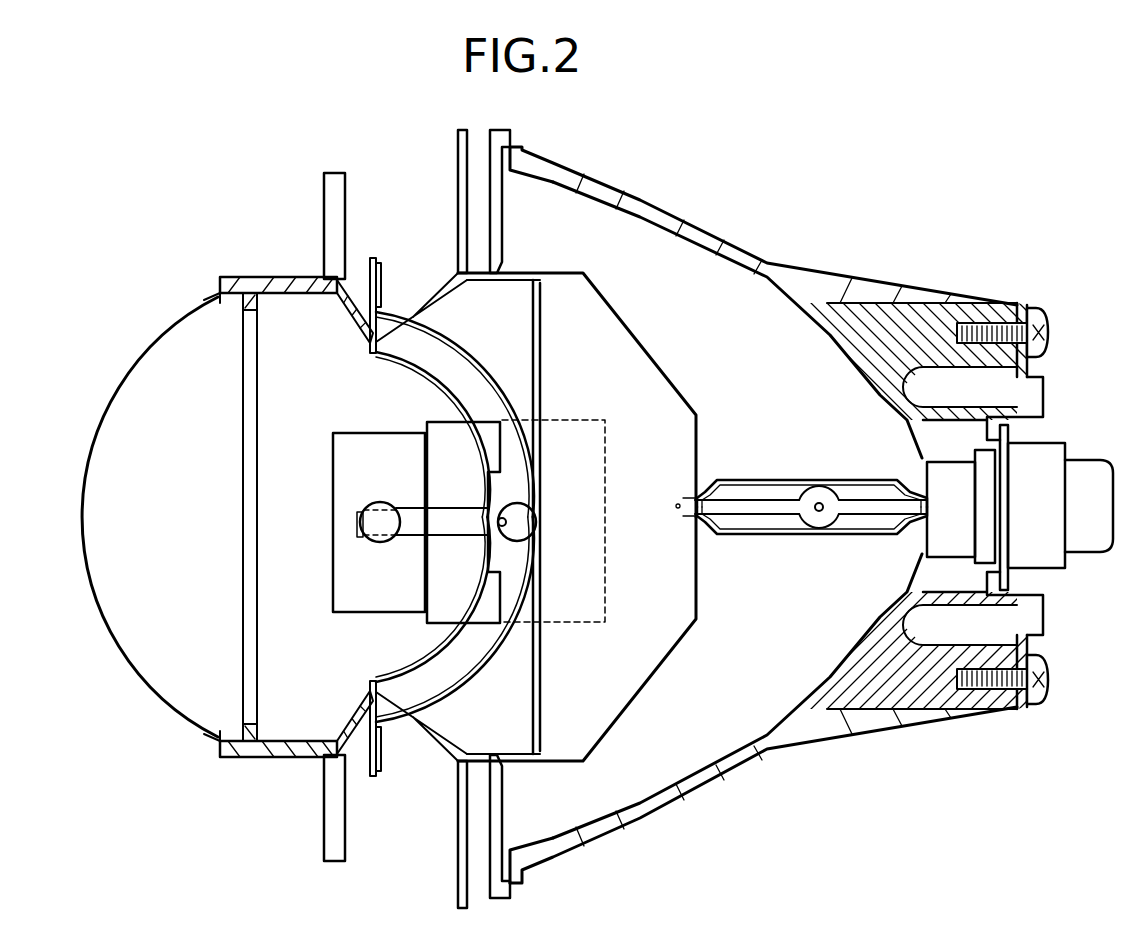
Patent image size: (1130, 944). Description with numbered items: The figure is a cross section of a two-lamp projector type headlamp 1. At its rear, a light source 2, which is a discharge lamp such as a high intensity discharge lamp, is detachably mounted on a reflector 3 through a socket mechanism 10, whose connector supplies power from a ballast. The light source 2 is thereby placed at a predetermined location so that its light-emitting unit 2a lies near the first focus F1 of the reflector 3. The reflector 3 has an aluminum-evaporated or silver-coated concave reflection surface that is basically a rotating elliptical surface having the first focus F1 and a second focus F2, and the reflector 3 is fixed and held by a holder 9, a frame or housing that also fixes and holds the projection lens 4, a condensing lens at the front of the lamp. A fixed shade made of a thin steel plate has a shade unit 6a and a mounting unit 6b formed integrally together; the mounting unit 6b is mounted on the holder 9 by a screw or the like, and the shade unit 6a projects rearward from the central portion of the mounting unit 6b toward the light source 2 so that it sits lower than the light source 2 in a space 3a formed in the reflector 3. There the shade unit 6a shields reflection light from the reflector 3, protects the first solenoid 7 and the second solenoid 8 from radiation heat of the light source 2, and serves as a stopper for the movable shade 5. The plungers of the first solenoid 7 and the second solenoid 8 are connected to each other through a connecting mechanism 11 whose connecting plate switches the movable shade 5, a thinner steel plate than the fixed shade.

The headlamp 1 is at (166, 278).
The light source 2 is at (760, 478).
The light-emitting unit 2a is at (800, 494).
The reflector 3 is at (663, 206).
The space 3a is at (725, 325).
The projection lens 4 is at (138, 672).
The movable shade 5 is at (478, 557).
The shade unit 6a is at (626, 688).
The mounting unit 6b is at (457, 172).
The first solenoid 7 is at (606, 432).
The second solenoid 8 is at (356, 434).
The holder 9 is at (280, 277).
The socket mechanism 10 is at (1088, 460).
The connecting mechanism 11 is at (418, 507).
The first focus F1 is at (818, 502).
The second focus F2 is at (503, 517).